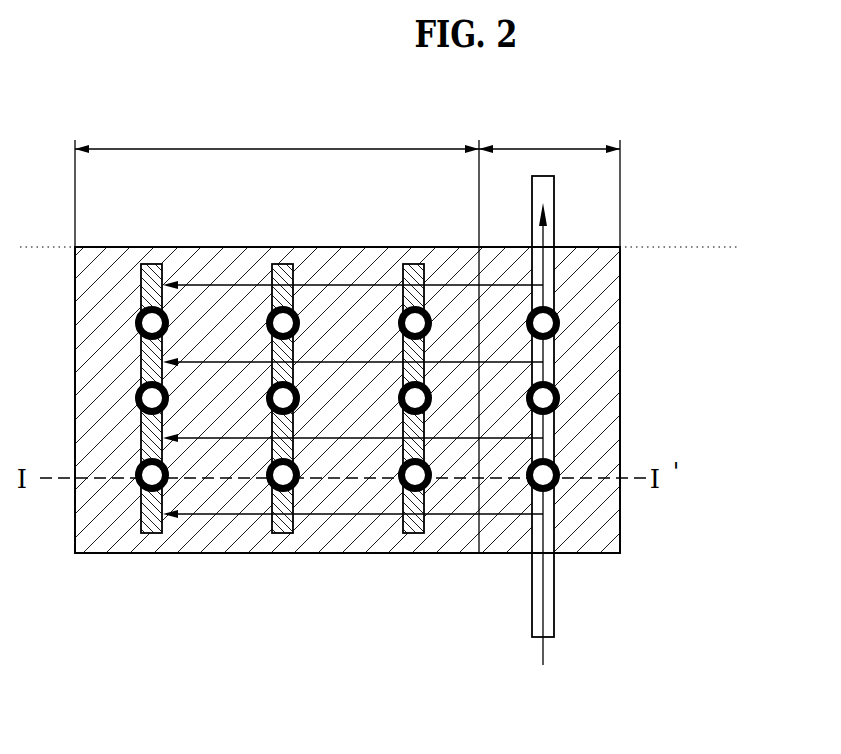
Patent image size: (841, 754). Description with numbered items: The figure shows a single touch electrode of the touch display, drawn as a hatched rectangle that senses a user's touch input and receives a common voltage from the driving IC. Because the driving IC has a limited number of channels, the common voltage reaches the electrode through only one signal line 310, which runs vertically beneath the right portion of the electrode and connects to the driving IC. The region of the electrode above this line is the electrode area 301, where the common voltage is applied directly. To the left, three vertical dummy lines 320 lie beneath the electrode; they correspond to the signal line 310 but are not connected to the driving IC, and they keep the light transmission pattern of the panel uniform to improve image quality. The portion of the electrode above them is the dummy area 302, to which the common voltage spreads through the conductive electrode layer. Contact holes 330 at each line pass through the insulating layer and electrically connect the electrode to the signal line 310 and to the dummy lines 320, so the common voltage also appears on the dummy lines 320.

The electrode area 301 is at (549, 180).
The dummy area 302 is at (277, 180).
The signal line 310 is at (549, 583).
The dummy line 320 is at (148, 533).
The contact hole 330 is at (549, 470).